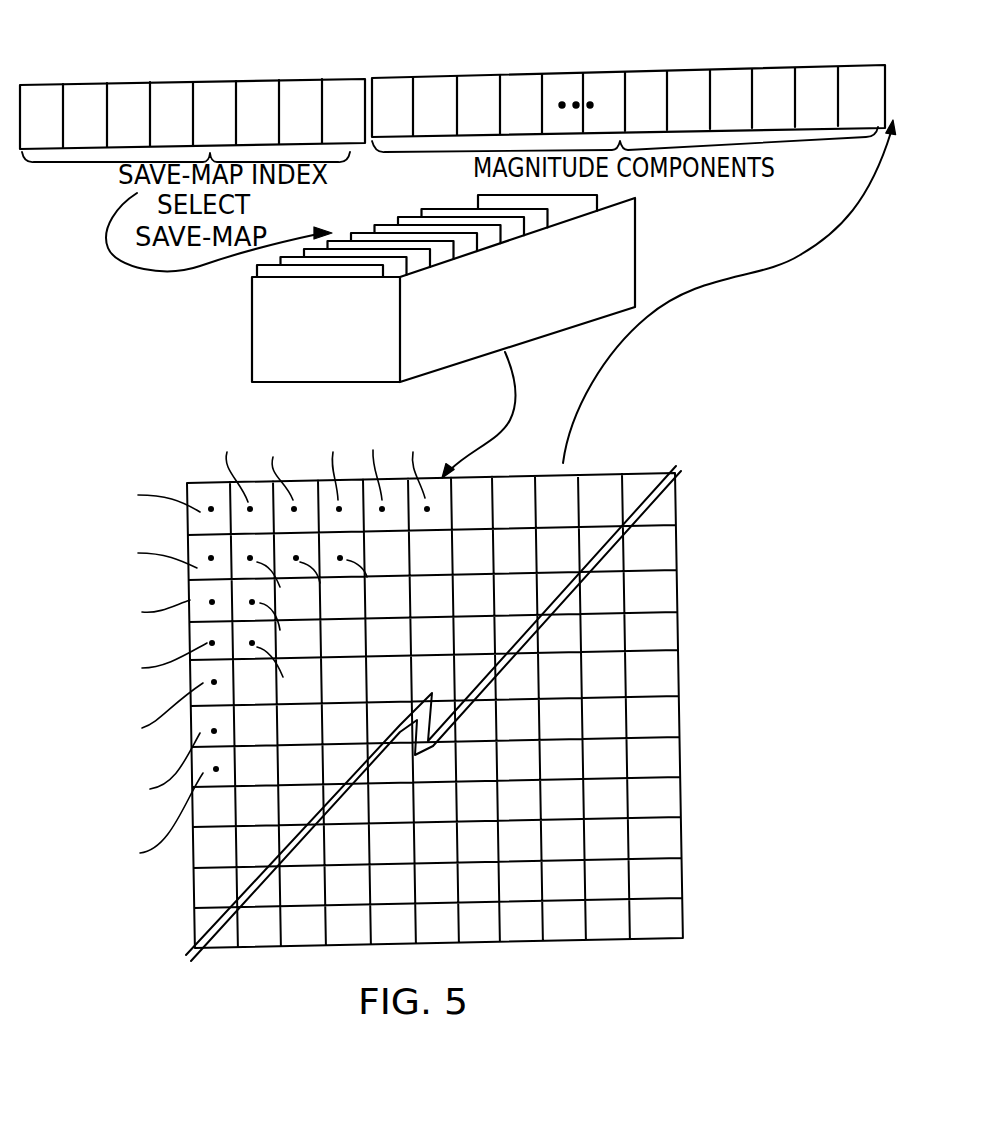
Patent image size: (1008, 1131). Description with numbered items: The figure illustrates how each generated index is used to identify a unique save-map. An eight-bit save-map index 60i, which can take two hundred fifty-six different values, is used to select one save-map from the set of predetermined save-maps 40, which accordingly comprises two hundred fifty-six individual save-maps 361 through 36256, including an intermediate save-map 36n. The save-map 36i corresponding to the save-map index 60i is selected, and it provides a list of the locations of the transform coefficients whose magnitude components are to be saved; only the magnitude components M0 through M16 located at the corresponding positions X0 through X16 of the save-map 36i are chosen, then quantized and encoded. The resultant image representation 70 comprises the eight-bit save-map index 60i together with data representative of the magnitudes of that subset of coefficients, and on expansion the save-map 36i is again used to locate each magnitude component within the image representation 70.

The save-map index 60i is at (83, 84).
The image representation 70 is at (860, 66).
The set of predetermined save-maps 40 is at (635, 252).
The save-map 36i is at (443, 250).
The save-map 36n is at (413, 220).
The save-map 361 is at (274, 293).
The save-map 36256 is at (578, 194).